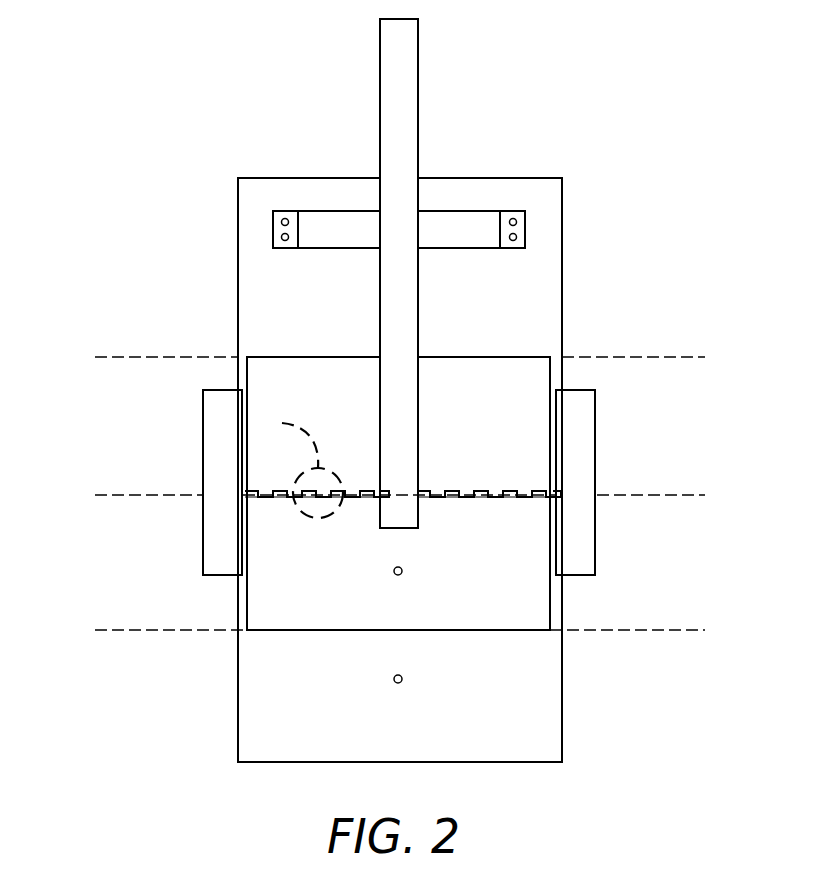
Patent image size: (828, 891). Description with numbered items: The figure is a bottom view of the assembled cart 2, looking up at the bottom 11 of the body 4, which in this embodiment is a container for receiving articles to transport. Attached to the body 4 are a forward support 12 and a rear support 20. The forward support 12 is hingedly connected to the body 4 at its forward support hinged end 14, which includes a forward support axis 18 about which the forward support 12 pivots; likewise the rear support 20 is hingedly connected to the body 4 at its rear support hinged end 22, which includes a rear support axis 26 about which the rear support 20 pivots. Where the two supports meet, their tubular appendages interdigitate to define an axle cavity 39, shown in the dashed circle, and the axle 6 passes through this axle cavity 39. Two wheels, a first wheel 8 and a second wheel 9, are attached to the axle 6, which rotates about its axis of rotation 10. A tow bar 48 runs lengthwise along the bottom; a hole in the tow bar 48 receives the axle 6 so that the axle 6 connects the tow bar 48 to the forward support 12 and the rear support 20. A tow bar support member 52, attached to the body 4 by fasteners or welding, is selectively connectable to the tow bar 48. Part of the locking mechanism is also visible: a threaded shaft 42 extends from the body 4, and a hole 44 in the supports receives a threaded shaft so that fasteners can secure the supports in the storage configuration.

The cart 2 is at (128, 140).
The body 4 is at (545, 277).
The axle 6 is at (247, 490).
The wheel 8 is at (575, 508).
The wheel 9 is at (220, 532).
The axis of rotation 10 is at (155, 495).
The bottom 11 is at (272, 272).
The forward support 12 is at (495, 372).
The forward support hinged end 14 is at (270, 357).
The forward support axis 18 is at (153, 355).
The rear support 20 is at (530, 610).
The rear support hinged end 22 is at (285, 632).
The rear support axis 26 is at (140, 630).
The axle cavity 39 is at (435, 490).
The threaded shaft 42 is at (402, 679).
The hole 44 is at (394, 571).
The tow bar 48 is at (398, 66).
The tow bar support member 52 is at (473, 227).